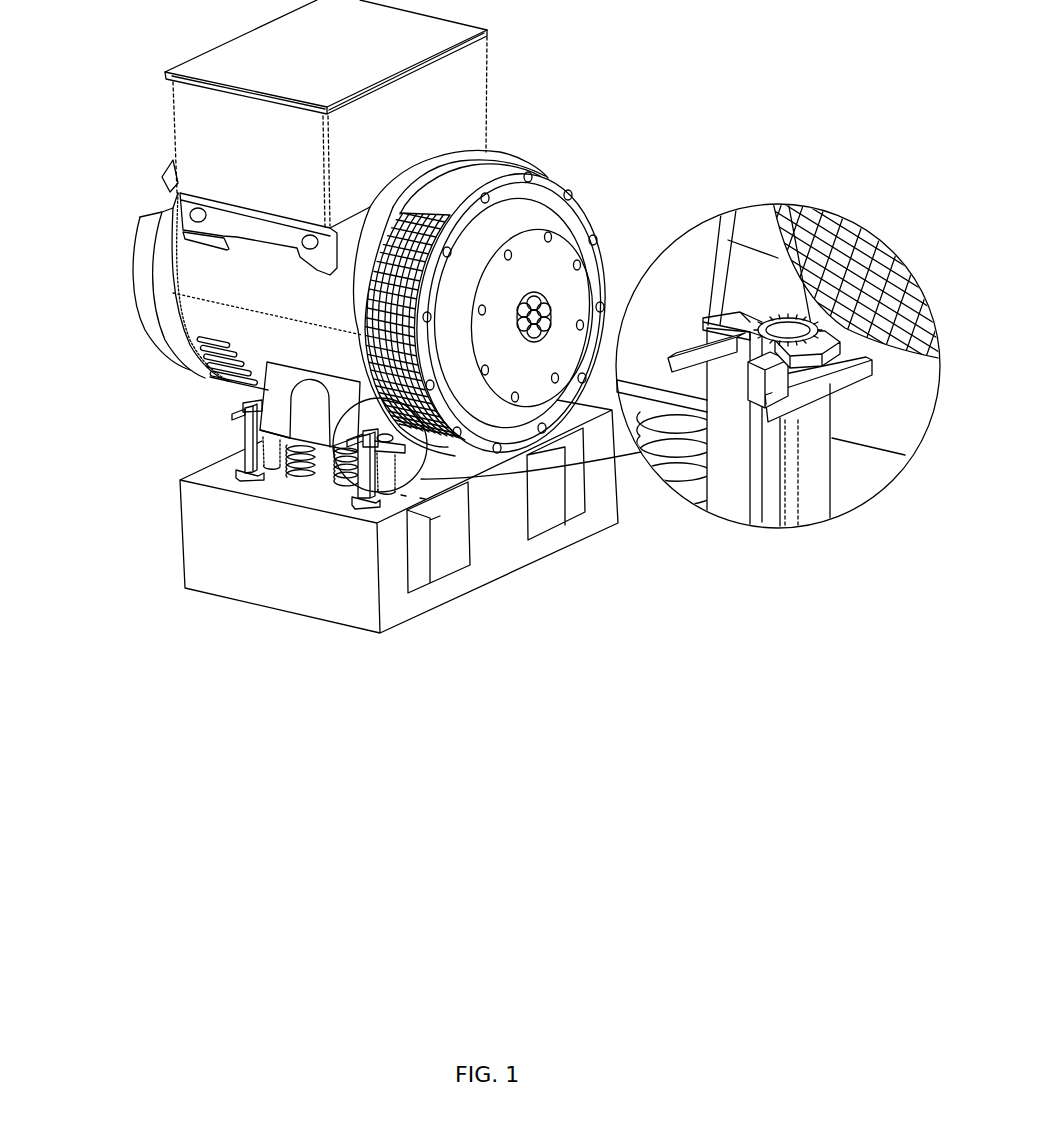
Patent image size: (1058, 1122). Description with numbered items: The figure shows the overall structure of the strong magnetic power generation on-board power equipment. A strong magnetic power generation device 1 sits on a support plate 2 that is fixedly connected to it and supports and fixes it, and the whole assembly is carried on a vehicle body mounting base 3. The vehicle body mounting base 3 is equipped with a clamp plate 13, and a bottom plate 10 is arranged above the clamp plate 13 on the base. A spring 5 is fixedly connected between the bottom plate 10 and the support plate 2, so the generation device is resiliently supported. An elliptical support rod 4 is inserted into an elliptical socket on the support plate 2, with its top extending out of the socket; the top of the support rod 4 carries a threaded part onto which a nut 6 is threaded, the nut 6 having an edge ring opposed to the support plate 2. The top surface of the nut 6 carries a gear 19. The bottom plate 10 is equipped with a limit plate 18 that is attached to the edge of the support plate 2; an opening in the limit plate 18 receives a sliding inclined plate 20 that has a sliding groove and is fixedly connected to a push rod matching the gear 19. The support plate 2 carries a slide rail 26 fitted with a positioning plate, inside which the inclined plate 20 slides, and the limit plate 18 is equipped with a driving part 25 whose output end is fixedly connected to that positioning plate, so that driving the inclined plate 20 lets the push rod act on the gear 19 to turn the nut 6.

The strong magnetic power generation device 1 is at (225, 274).
The support plate 2 is at (210, 378).
The vehicle body mounting base 3 is at (278, 590).
The support rod 4 is at (267, 450).
The spring 5 is at (305, 475).
The nut 6 is at (815, 352).
The bottom plate 10 is at (228, 458).
The clamp plate 13 is at (430, 527).
The limit plate 18 is at (240, 470).
The gear 19 is at (792, 205).
The inclined plate 20 is at (705, 352).
The driving part 25 is at (758, 330).
The slide rail 26 is at (782, 402).